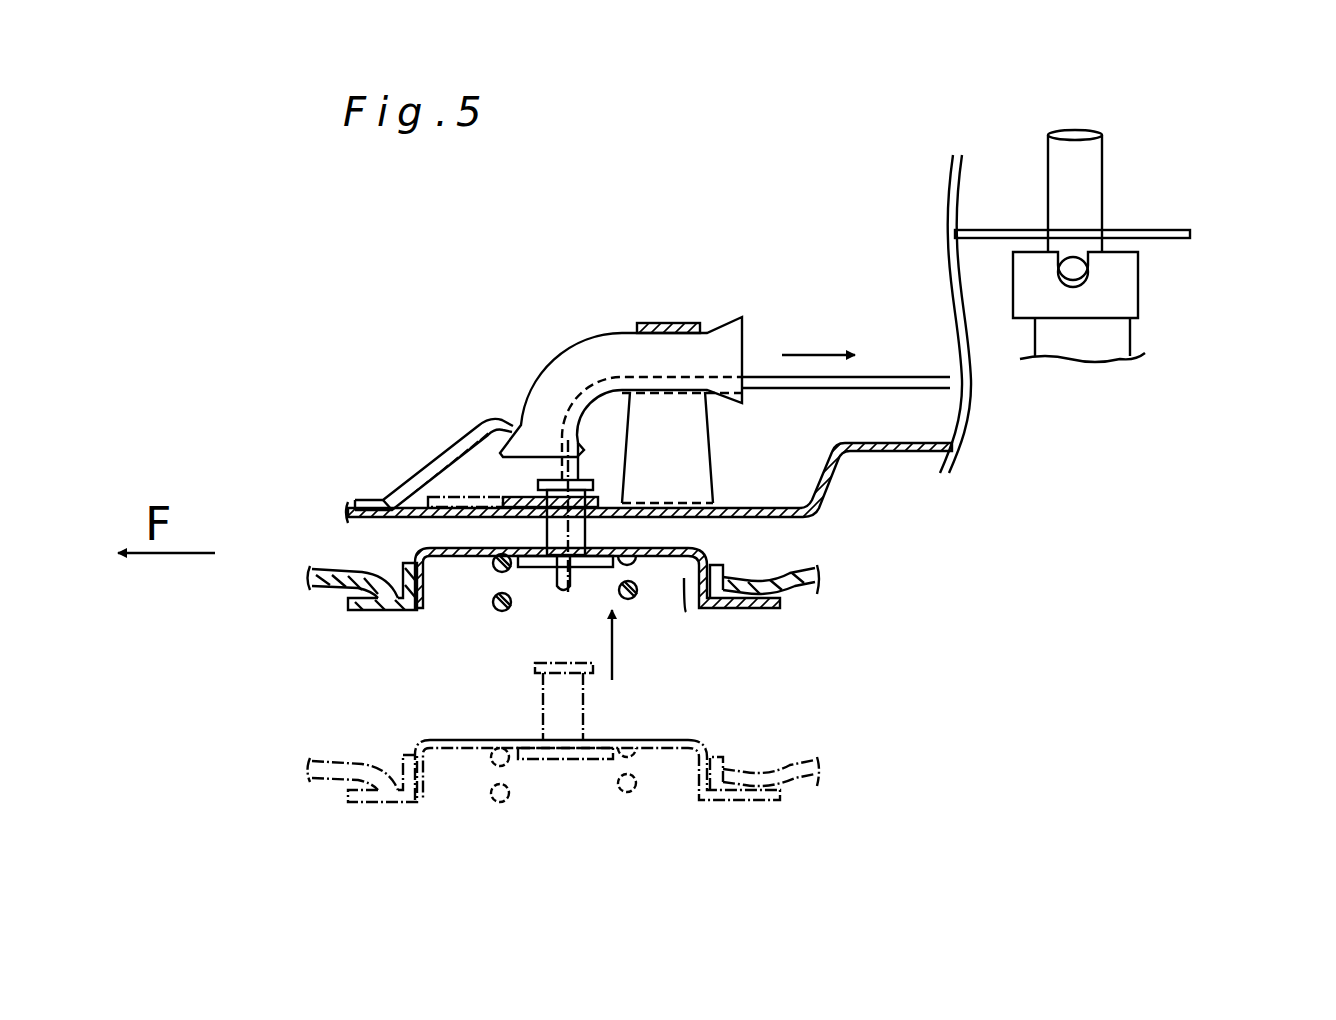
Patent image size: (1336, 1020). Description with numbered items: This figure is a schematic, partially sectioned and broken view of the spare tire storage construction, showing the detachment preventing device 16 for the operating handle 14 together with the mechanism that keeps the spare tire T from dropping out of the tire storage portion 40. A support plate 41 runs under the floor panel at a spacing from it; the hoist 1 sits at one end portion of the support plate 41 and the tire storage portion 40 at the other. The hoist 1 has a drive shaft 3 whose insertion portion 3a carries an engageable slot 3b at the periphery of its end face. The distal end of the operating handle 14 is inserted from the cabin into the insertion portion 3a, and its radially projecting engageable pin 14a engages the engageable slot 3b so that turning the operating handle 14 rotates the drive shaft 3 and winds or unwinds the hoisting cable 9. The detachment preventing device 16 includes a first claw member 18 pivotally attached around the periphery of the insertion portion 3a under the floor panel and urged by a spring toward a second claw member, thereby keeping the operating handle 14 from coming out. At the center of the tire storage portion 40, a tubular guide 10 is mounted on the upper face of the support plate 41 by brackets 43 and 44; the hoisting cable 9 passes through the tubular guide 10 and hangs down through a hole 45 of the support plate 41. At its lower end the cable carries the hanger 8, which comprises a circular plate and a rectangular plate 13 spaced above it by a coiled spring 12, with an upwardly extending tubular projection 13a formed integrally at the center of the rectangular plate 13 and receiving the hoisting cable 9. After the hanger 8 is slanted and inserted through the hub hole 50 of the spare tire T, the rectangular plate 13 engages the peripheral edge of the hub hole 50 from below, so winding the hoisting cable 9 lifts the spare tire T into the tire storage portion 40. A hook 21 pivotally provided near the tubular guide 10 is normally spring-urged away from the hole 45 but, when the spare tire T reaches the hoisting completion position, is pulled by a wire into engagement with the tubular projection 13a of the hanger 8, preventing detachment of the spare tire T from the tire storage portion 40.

The hoist 1 is at (1190, 345).
The drive shaft 3 is at (1042, 338).
The insertion portion 3a is at (1030, 283).
The engageable slot 3b is at (1086, 244).
The hanger 8 is at (642, 615).
The hoisting cable 9 is at (878, 377).
The tubular guide 10 is at (584, 357).
The coiled spring 12 is at (502, 612).
The rectangular plate 13 is at (458, 556).
The tubular projection 13a is at (587, 525).
The operating handle 14 is at (1053, 172).
The engageable pin 14a is at (1073, 282).
The detachment preventing device 16 is at (1240, 156).
The first claw member 18 is at (1173, 178).
The hook 21 is at (560, 512).
The tire storage portion 40 is at (408, 665).
The support plate 41 is at (897, 452).
The bracket 43 is at (437, 453).
The bracket 44 is at (688, 434).
The hole 45 is at (597, 497).
The hub hole 50 is at (695, 570).
The spare tire T is at (325, 592).